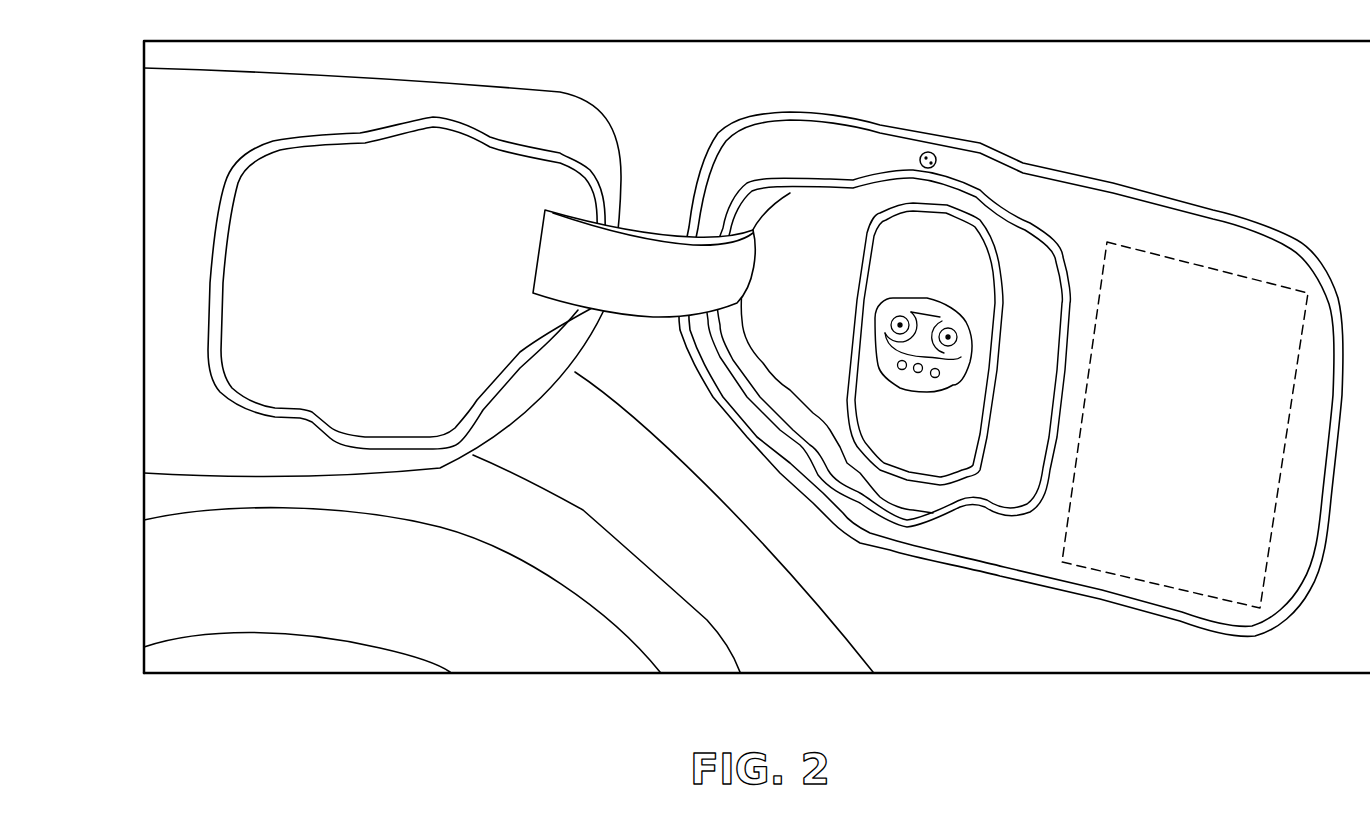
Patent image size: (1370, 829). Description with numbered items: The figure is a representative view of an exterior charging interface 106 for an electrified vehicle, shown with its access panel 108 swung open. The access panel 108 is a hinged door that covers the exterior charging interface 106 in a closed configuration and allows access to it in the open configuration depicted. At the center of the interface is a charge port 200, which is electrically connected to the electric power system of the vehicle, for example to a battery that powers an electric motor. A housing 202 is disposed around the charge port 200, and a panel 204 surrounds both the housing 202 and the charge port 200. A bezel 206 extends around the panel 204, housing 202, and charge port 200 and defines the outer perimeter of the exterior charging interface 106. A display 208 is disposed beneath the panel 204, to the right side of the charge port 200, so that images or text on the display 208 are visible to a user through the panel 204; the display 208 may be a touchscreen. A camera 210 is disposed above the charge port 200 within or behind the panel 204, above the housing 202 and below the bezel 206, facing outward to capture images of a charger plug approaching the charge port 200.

The exterior charging interface 106 is at (1062, 157).
The access panel 108 is at (597, 132).
The charge port 200 is at (930, 290).
The housing 202 is at (1030, 293).
The panel 204 is at (1025, 550).
The bezel 206 is at (1243, 210).
The display 208 is at (1177, 593).
The camera 210 is at (918, 152).